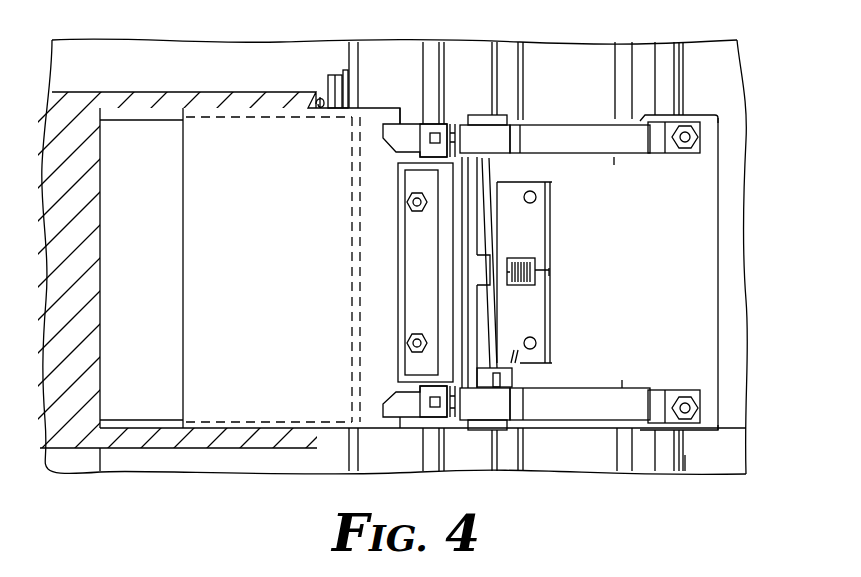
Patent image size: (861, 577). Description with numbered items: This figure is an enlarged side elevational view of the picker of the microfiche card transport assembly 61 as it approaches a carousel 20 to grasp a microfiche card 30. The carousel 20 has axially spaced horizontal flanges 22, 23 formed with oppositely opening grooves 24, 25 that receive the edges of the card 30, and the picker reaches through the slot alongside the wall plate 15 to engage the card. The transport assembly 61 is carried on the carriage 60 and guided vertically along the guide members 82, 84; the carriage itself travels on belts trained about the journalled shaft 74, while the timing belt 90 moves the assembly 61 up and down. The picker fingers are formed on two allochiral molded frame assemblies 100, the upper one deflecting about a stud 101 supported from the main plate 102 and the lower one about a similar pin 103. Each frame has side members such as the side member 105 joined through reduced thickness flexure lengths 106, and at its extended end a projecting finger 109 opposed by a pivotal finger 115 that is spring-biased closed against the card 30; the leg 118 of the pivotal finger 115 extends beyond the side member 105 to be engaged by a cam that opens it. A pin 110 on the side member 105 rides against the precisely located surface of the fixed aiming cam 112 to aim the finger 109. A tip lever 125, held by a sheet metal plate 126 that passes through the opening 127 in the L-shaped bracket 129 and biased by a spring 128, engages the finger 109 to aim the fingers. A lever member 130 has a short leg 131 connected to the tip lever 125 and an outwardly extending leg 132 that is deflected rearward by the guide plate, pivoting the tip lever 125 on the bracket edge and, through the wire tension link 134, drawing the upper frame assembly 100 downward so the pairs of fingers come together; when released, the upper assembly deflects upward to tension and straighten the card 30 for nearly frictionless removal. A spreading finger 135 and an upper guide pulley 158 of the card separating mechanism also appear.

The carousel 20 is at (136, 86).
The flange 22 is at (258, 96).
The flange 23 is at (166, 450).
The groove 24 is at (148, 112).
The groove 25 is at (147, 418).
The microfiche card 30 is at (192, 266).
The plate 15 is at (356, 468).
The carriage 60 is at (694, 462).
The microfiche card transport assembly 61 is at (726, 184).
The shaft 74 is at (435, 56).
The guide member 82 is at (683, 56).
The guide member 84 is at (498, 62).
The timing belt 90 is at (622, 46).
The frame assembly 100 is at (614, 165).
The stud 101 is at (690, 137).
The main plate 102 is at (705, 256).
The pin 103 is at (690, 408).
The side member 105 is at (573, 124).
The flexure length 106 is at (526, 122).
The finger 109 is at (390, 137).
The pin 110 is at (503, 166).
The aiming cam 112 is at (452, 191).
The pivotal finger 115 is at (412, 122).
The leg 118 is at (466, 122).
The tip lever 125 is at (478, 229).
The sheet metal plate 126 is at (483, 272).
The opening 127 is at (522, 263).
The spring 128 is at (540, 270).
The L-shaped bracket 129 is at (548, 301).
The lever member 130 is at (518, 356).
The short leg 131 is at (492, 364).
The leg 132 is at (516, 376).
The tension link 134 is at (506, 238).
The spreading finger 135 is at (318, 97).
The upper guide pulley 158 is at (333, 73).